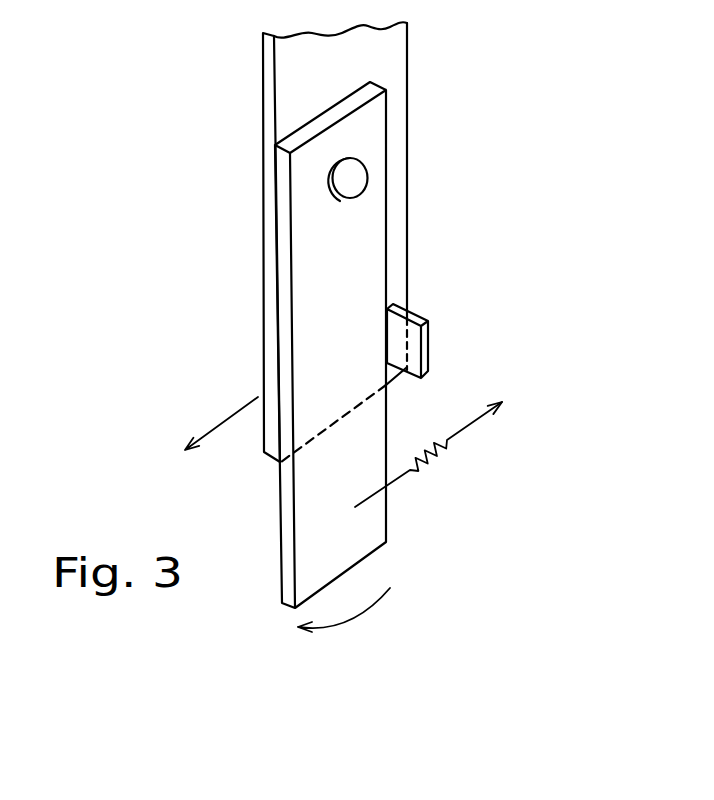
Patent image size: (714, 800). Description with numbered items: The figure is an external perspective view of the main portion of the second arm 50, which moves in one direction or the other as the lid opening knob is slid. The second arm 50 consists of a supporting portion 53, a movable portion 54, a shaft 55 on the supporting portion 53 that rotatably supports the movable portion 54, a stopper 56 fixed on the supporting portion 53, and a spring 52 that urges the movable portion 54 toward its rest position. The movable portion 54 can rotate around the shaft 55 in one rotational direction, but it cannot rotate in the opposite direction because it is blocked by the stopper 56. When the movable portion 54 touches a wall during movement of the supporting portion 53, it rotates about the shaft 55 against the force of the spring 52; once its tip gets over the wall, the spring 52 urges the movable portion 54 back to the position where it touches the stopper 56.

The second arm 50 is at (246, 82).
The spring 52 is at (441, 460).
The supporting portion 53 is at (395, 90).
The movable portion 54 is at (363, 243).
The shaft 55 is at (355, 175).
The stopper 56 is at (428, 332).